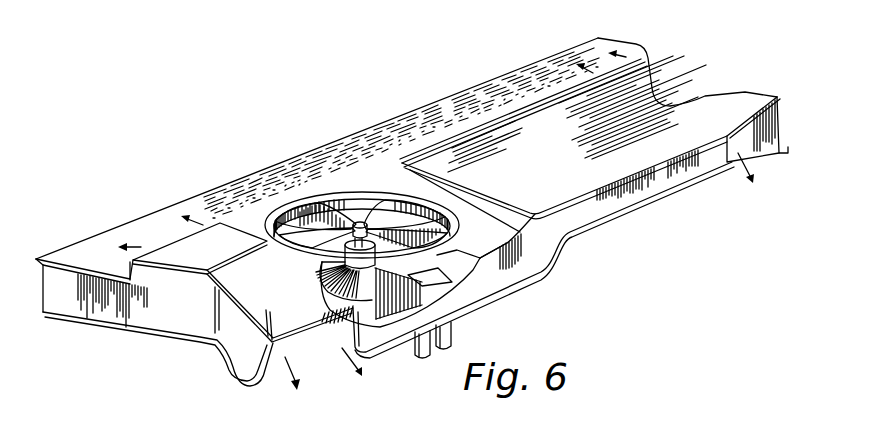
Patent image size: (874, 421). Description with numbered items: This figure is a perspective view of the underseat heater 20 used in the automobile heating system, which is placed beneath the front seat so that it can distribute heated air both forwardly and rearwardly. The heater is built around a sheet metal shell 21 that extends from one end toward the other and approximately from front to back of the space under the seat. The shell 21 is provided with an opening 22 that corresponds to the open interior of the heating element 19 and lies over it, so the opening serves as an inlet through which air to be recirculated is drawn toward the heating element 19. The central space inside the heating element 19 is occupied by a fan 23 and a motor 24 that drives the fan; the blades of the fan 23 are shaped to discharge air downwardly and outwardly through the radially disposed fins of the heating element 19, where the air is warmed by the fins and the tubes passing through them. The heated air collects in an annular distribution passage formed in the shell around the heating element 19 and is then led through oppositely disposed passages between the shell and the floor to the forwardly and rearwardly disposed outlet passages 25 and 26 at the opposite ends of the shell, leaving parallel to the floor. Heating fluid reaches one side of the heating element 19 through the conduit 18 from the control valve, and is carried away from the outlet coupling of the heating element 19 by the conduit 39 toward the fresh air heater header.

The conduit 18 is at (452, 339).
The heating element 19 is at (365, 290).
The underseat heater 20 is at (263, 174).
The sheet metal shell 21 is at (493, 237).
The opening 22 is at (354, 204).
The fan 23 is at (388, 213).
The motor 24 is at (348, 250).
The forwardly disposed outlet passage 25 is at (318, 340).
The rearwardly disposed outlet passage 26 is at (157, 248).
The conduit 39 is at (418, 353).